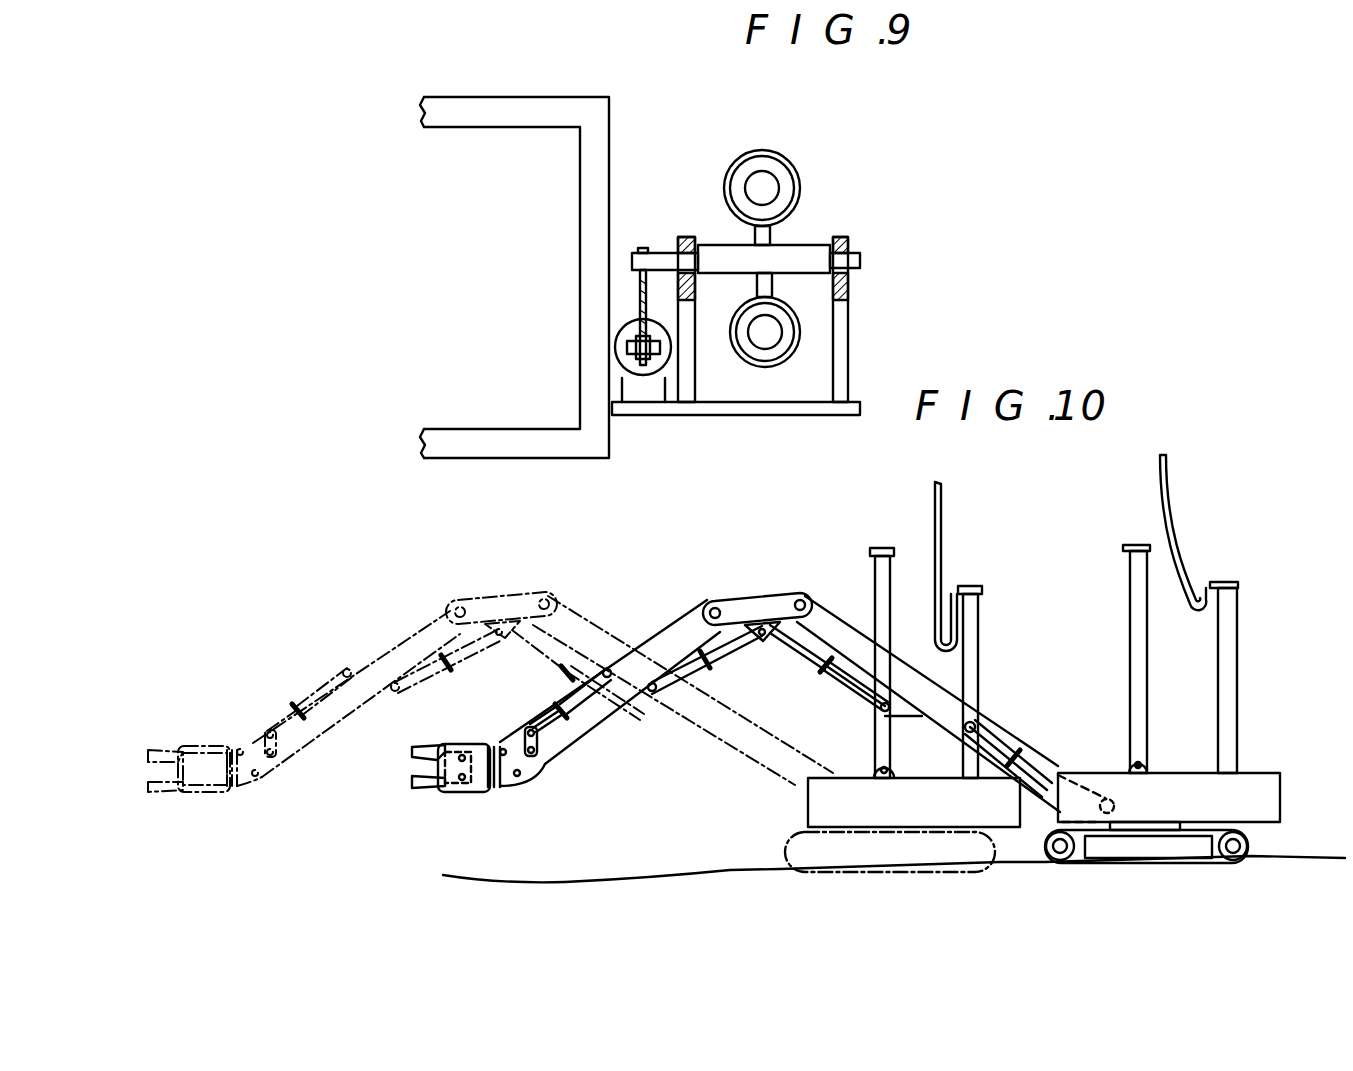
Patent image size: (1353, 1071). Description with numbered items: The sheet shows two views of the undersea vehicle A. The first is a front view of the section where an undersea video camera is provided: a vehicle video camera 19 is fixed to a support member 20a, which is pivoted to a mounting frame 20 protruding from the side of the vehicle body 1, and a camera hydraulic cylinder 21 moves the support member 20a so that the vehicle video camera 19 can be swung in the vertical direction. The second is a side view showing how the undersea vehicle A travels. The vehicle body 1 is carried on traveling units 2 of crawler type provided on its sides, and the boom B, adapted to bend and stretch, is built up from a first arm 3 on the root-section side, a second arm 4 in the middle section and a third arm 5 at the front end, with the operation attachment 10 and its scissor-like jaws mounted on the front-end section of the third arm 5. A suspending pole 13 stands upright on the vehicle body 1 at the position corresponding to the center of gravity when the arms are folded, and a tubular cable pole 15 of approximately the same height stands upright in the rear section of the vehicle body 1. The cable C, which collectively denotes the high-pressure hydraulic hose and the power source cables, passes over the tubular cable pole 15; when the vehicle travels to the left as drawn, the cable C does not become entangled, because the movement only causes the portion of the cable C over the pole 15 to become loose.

In FIG. 9, the undersea vehicle A is at (603, 94).
In FIG. 10, the undersea vehicle A is at (838, 776).
In FIG. 9, the vehicle video camera 19 is at (782, 158).
In FIG. 9, the mounting frame 20 is at (759, 416).
In FIG. 9, the support member 20a is at (805, 243).
In FIG. 9, the camera hydraulic cylinder 21 is at (620, 332).
In FIG. 10, the boom B is at (408, 638).
In FIG. 10, the cable C is at (941, 547).
In FIG. 10, the vehicle body 1 is at (1282, 800).
In FIG. 10, the traveling unit 2 is at (1255, 850).
In FIG. 10, the first arm 3 is at (1013, 735).
In FIG. 10, the second arm 4 is at (762, 597).
In FIG. 10, the third arm 5 is at (668, 632).
In FIG. 10, the operation attachment 10 is at (469, 796).
In FIG. 10, the suspending pole 13 is at (876, 578).
In FIG. 10, the tubular cable pole 15 is at (980, 632).